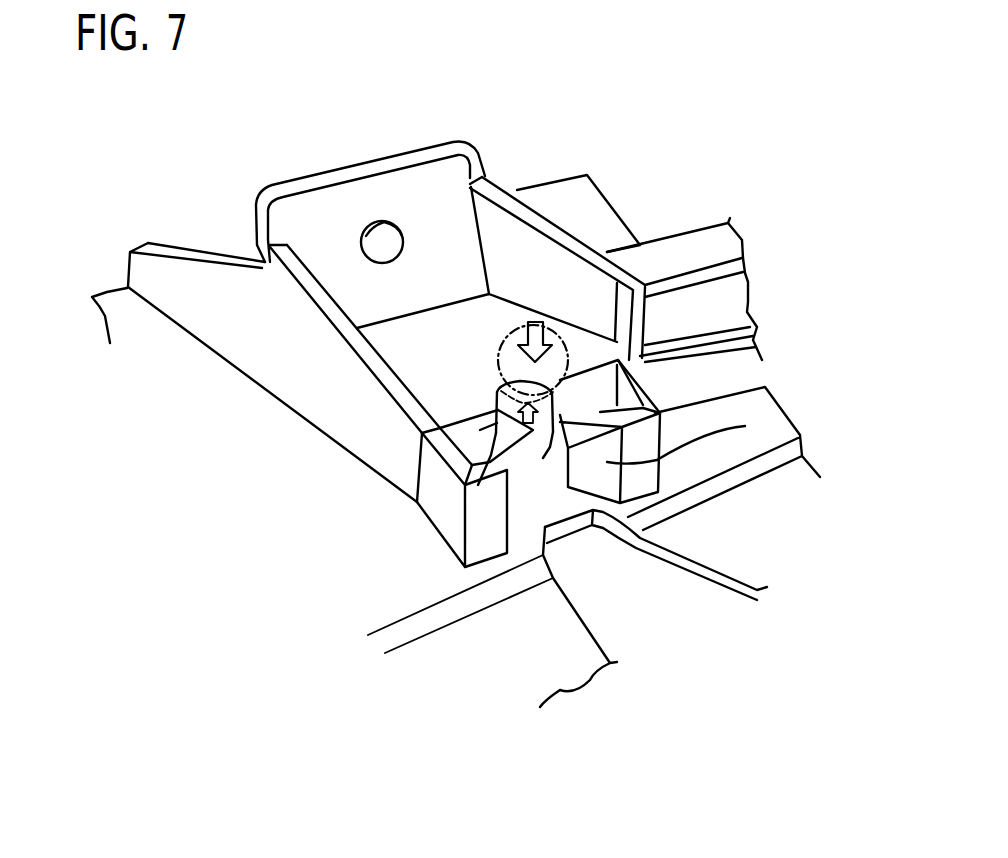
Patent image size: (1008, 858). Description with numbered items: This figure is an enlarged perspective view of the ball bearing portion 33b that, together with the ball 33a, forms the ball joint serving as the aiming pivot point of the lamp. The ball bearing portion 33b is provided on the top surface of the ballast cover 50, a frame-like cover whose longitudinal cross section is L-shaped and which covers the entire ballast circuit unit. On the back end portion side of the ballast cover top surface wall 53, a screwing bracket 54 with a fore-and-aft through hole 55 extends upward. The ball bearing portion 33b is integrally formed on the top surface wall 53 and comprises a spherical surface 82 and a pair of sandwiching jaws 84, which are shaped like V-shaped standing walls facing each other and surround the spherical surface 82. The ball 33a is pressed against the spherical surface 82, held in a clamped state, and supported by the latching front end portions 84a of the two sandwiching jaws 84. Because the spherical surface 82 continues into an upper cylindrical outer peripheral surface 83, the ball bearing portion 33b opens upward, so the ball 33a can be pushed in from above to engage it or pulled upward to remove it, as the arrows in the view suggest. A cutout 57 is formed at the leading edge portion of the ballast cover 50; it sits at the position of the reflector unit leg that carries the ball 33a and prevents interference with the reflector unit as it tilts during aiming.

The ballast cover 50 is at (411, 244).
The ballast cover top surface wall 53 is at (276, 440).
The screwing bracket 54 is at (282, 210).
The mounting hole 55 is at (373, 235).
The cutout 57 is at (663, 553).
The ball 33a is at (555, 335).
The ball bearing portion 33b is at (633, 340).
The spherical surface 82 is at (652, 502).
The upper cylindrical outer peripheral surface 83 is at (496, 430).
The sandwiching jaws 84 is at (745, 426).
The latching front end portions 84a is at (570, 401).